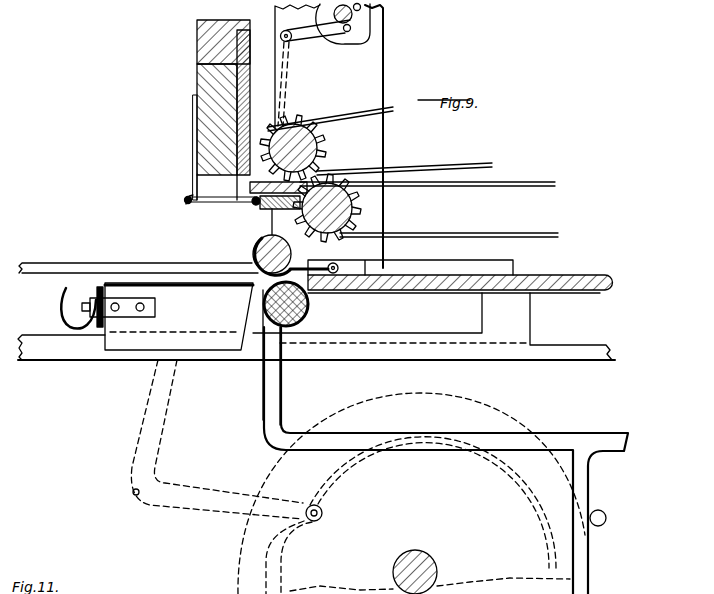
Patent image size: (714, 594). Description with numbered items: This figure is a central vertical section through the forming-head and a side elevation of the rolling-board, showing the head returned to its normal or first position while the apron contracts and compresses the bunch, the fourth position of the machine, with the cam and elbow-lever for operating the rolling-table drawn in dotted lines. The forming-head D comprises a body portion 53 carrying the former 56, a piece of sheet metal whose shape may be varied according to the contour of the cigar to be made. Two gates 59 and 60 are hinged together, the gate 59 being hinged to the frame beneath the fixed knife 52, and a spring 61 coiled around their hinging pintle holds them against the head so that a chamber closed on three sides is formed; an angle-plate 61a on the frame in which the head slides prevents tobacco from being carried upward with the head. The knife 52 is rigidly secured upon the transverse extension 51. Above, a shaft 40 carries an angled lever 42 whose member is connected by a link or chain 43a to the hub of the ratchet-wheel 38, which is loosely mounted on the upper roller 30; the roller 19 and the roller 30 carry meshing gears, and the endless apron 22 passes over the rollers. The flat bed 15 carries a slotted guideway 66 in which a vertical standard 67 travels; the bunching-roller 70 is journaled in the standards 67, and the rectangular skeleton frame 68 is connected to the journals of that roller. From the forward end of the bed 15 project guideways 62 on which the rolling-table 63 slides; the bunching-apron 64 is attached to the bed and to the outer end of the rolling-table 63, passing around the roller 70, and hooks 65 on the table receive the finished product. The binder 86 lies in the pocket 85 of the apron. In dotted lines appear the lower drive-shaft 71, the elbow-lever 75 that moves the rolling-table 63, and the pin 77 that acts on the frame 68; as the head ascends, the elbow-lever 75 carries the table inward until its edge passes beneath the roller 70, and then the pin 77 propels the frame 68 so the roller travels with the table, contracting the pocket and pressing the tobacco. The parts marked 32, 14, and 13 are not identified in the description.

The forming-head D is at (190, 31).
The body portion 53 is at (206, 42).
The former 56 is at (197, 79).
The gate 60 is at (193, 147).
The spring 61 is at (175, 192).
The angle-plate 61a is at (281, 68).
The gate 59 is at (222, 203).
The transverse projection or extension 51 is at (262, 206).
The shaft 40 is at (333, 14).
The angled lever 42 is at (366, 16).
The link or chain 43a is at (316, 55).
The upper roller 30 is at (333, 144).
The knife 52 is at (338, 163).
The rod 32 is at (411, 146).
The roller 19 is at (362, 210).
The ratchet-wheel 38 is at (360, 229).
The endless apron 22 is at (449, 227).
The binder 86 is at (410, 261).
The bed 15 is at (597, 260).
The slotted guideway 66 is at (138, 261).
The bunching-roller 70 is at (267, 248).
The skeleton frame 68 is at (254, 272).
The vertical standard 67 is at (326, 258).
The pocket 85 is at (306, 312).
The bunching-apron 64 is at (206, 276).
The rolling-table 63 is at (175, 316).
The hooks 65 is at (65, 302).
The longitudinal guideways 62 is at (316, 357).
The elbow-lever 75 is at (146, 401).
The arm 14 is at (320, 480).
The segment 13 is at (411, 493).
The lower drive-shaft 71 is at (436, 562).
The pin 77 is at (606, 520).